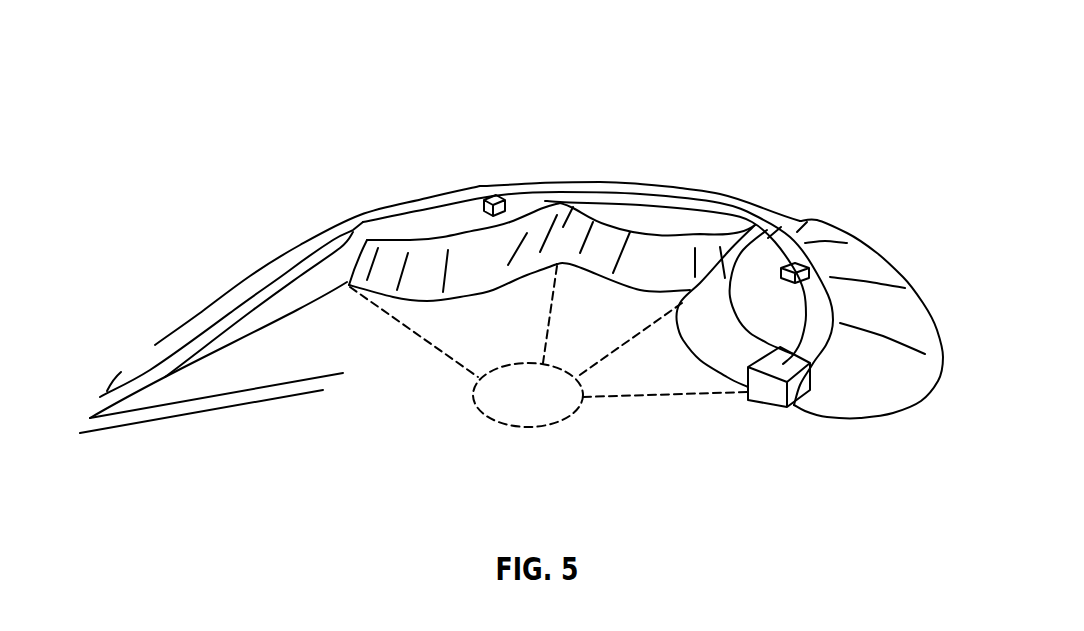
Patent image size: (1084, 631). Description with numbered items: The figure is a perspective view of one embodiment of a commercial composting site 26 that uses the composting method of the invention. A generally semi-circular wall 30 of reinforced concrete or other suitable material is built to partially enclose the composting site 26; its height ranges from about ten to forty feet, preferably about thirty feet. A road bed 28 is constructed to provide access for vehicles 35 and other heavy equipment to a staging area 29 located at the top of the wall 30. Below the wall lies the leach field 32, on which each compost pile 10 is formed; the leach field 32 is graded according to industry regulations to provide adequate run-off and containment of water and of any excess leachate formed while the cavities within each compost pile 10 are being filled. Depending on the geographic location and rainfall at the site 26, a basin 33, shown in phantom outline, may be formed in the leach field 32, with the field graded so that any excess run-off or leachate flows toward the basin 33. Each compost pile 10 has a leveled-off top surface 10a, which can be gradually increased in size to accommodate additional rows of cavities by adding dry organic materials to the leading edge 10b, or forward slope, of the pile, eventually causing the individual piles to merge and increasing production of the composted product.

The commercial composting site 26 is at (603, 110).
The road bed 28 is at (254, 308).
The staging area 29 is at (641, 182).
The semi-circular wall 30 is at (309, 291).
The compost pile 10 is at (443, 232).
The top surface 10a is at (783, 340).
The leading edge 10b is at (736, 370).
The leach field 32 is at (500, 327).
The basin 33 is at (557, 407).
The vehicles 35 is at (498, 195).